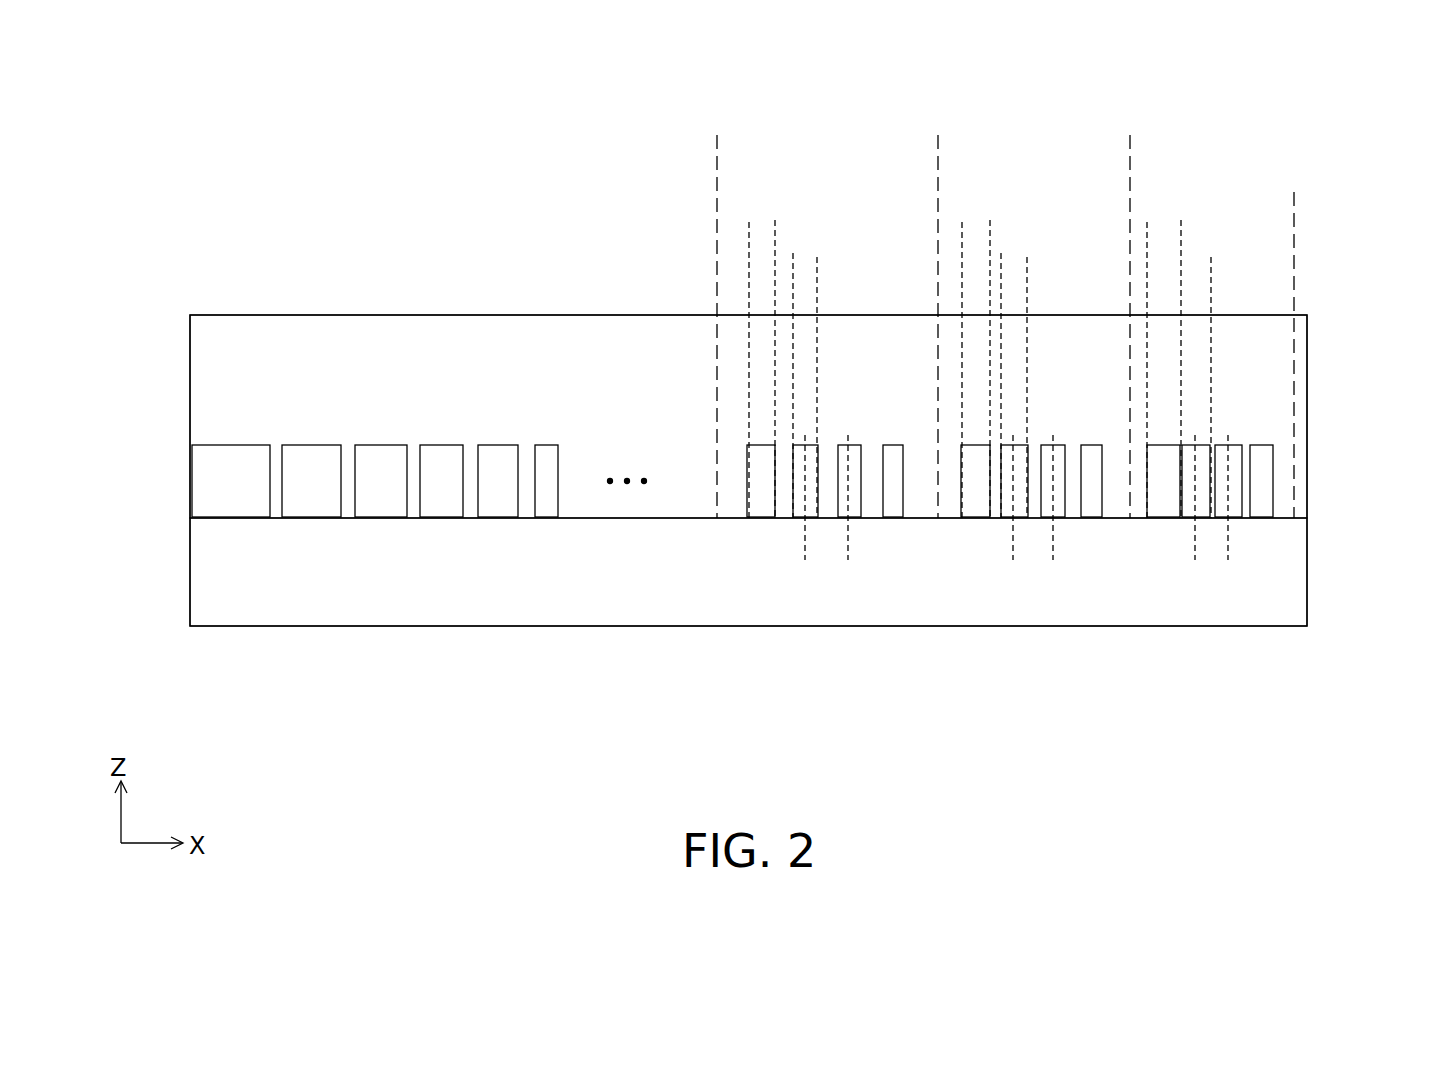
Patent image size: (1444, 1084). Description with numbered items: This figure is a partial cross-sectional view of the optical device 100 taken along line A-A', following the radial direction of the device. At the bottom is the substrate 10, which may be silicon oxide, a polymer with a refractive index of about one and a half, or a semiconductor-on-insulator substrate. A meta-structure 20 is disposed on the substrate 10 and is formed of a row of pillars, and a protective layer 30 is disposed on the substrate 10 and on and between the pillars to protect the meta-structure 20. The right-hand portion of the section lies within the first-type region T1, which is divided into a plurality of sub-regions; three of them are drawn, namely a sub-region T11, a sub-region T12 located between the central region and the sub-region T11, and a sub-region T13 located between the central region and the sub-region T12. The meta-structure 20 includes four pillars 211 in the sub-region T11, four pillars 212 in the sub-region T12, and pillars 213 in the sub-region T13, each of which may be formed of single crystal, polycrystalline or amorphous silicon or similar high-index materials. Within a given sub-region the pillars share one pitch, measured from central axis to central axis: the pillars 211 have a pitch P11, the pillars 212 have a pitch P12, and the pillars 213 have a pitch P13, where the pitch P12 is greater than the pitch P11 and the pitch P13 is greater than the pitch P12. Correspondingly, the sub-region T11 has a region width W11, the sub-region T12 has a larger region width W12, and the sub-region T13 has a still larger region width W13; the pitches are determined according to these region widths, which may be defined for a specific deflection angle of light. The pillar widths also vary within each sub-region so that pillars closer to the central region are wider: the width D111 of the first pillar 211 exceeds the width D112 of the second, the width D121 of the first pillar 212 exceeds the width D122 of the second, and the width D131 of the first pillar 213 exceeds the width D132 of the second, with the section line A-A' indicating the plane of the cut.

The optical device 100 is at (237, 54).
The substrate 10 is at (210, 573).
The meta-structure 20 is at (1315, 445).
The protective layer 30 is at (210, 377).
The pillars 211 is at (1268, 500).
The pillars 212 is at (1015, 505).
The pillars 213 is at (802, 505).
The first-type region T1 is at (201, 143).
The sub-region T11 is at (1294, 141).
The sub-region T12 is at (1130, 141).
The sub-region T13 is at (938, 141).
The region width W11 is at (1294, 186).
The region width W12 is at (1130, 186).
The region width W13 is at (938, 186).
The width D111 is at (1105, 230).
The width D112 is at (1147, 265).
The width D121 is at (925, 230).
The width D122 is at (962, 265).
The width D131 is at (705, 230).
The width D132 is at (749, 265).
The pitch P11 is at (1152, 552).
The pitch P12 is at (1053, 552).
The pitch P13 is at (850, 552).
The line A-A' A is at (1295, 763).